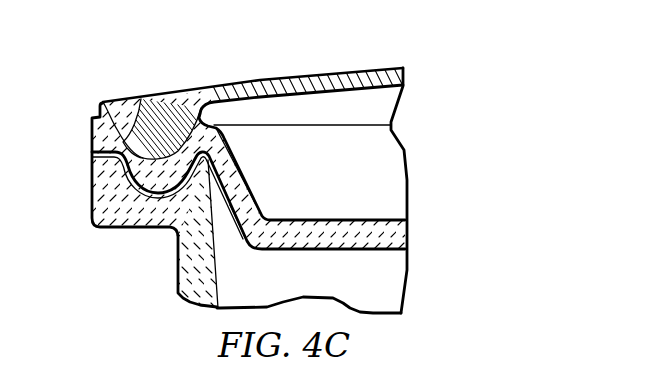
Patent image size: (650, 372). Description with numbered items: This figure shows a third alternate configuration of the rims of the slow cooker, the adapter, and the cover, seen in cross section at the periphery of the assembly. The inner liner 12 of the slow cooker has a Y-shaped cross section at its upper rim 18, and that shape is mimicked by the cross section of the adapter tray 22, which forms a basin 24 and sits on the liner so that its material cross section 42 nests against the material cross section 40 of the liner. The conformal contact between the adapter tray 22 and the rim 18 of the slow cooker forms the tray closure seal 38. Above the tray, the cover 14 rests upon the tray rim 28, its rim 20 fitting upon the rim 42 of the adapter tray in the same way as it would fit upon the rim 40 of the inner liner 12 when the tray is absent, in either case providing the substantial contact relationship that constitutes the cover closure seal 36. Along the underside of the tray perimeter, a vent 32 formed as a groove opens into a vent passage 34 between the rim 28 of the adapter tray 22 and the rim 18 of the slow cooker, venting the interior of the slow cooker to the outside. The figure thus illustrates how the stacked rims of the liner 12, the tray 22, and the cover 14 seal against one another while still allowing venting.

The inner liner 12 is at (178, 288).
The cover 14 is at (257, 78).
The upper rim of the liner 18 is at (100, 163).
The rim of the cover 20 is at (102, 101).
The adapter tray 22 is at (348, 250).
The basin 24 is at (320, 189).
The tray rim 28 is at (100, 113).
The vent 32 is at (92, 153).
The vent passage 34 is at (240, 226).
The cover closure seal 36 is at (140, 101).
The tray closure seal 38 is at (137, 198).
The material cross section of the liner 40 is at (168, 231).
The material cross section of the adapter tray 42 is at (213, 140).